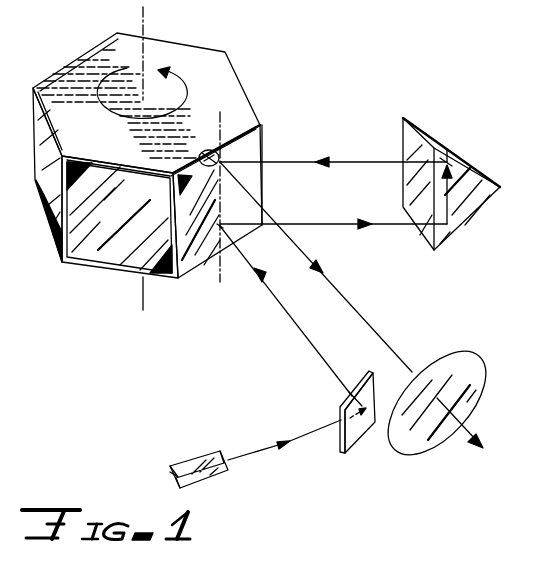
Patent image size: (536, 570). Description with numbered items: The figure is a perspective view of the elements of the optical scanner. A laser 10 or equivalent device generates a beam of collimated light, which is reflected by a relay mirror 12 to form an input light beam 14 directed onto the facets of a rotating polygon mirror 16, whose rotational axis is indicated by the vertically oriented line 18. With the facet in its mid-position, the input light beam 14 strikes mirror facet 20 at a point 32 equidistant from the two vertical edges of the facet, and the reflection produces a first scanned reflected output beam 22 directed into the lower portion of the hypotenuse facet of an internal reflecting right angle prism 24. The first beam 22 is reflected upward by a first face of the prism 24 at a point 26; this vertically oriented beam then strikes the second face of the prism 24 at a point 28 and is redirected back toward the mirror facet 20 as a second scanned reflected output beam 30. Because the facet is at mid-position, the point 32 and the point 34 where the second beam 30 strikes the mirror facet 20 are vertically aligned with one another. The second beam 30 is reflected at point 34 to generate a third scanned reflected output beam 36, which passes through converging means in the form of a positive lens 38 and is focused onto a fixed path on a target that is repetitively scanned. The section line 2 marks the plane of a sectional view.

The section line 2- 2 is at (115, 57).
The light source 10 is at (196, 456).
The mirror 12 is at (360, 435).
The light beam 14 is at (308, 342).
The polygonal scanning mirror 16 is at (206, 55).
The axis of rotation 18 is at (143, 24).
The reflective facet 20 is at (257, 145).
The reflected beam 22 is at (345, 223).
The prism 24 is at (430, 133).
The prism face 26 is at (455, 227).
The prism reflecting face 28 is at (452, 160).
The return beam 30 is at (372, 160).
The point of incidence 32 is at (220, 226).
The beam spot 34 is at (200, 157).
The output beam 36 is at (325, 270).
The lens 38 is at (462, 362).